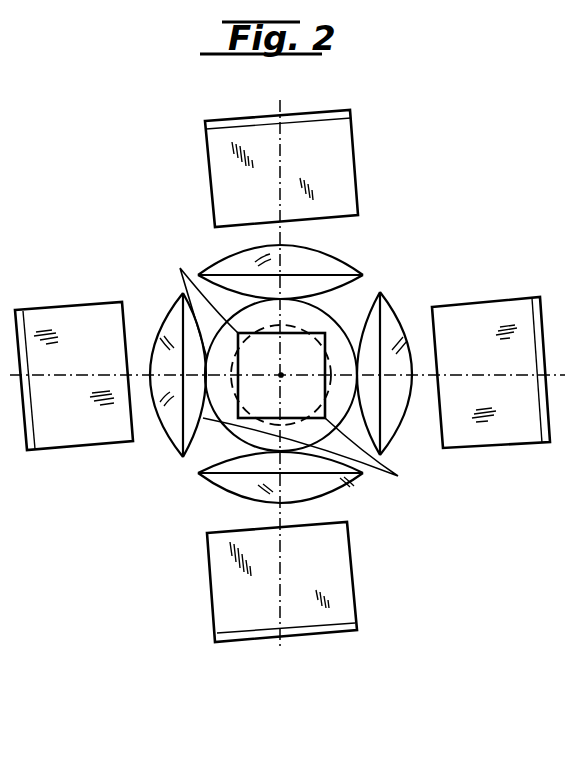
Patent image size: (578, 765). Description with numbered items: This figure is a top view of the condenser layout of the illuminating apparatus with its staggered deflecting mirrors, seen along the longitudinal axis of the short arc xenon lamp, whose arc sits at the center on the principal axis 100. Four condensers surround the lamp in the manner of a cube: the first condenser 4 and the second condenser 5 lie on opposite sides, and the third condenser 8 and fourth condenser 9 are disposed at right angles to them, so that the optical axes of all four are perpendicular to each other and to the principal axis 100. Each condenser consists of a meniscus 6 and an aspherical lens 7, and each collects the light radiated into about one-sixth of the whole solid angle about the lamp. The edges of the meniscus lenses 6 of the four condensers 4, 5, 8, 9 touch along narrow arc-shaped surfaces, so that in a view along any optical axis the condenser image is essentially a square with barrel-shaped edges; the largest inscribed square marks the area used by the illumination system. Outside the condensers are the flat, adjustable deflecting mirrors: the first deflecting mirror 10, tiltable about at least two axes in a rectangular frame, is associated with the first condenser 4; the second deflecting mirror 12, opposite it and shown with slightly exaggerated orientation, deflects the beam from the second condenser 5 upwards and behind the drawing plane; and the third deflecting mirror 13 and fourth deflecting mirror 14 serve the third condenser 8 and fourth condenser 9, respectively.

The first condenser 4 is at (395, 294).
The second condenser 5 is at (172, 458).
The meniscus lens 6 is at (292, 368).
The aspherical lens 7 is at (283, 384).
The third condenser 8 is at (360, 260).
The fourth condenser 9 is at (343, 493).
The first flat adjustable deflecting mirror 10 is at (465, 330).
The second deflecting mirror 12 is at (45, 438).
The third adjustable deflecting mirror 13 is at (343, 153).
The fourth adjustable deflecting mirror 14 is at (222, 591).
The principal axis 100 is at (281, 375).